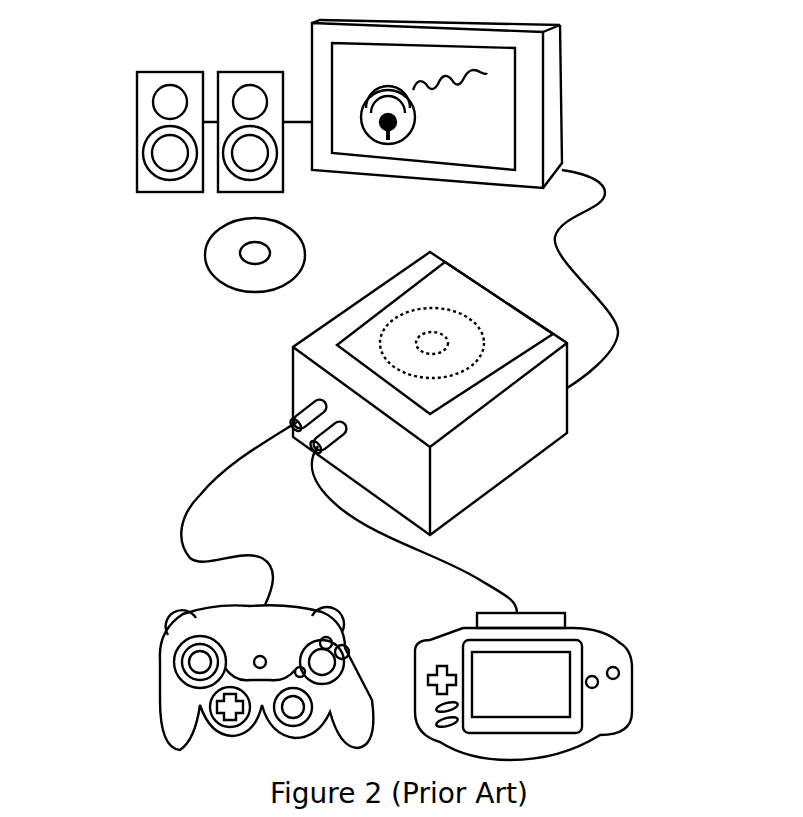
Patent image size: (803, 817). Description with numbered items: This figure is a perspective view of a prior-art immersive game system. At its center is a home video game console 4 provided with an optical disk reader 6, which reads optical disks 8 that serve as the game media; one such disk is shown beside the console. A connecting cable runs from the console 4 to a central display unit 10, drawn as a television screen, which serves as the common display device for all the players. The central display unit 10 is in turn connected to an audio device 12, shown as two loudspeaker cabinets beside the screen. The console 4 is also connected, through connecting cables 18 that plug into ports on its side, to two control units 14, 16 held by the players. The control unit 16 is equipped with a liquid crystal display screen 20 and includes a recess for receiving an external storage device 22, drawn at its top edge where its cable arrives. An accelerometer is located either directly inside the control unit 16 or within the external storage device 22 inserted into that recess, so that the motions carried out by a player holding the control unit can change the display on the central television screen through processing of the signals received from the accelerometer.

The home video game console 4 is at (499, 393).
The optical disk reader 6 is at (457, 337).
The optical disk 8 is at (227, 270).
The central display unit 10 is at (488, 117).
The audio device 12 is at (158, 122).
The control unit 14 is at (175, 717).
The control unit 16 is at (584, 640).
The connecting cables 18 is at (340, 508).
The liquid crystal display screen 20 is at (535, 690).
The external storage device 22 is at (543, 618).